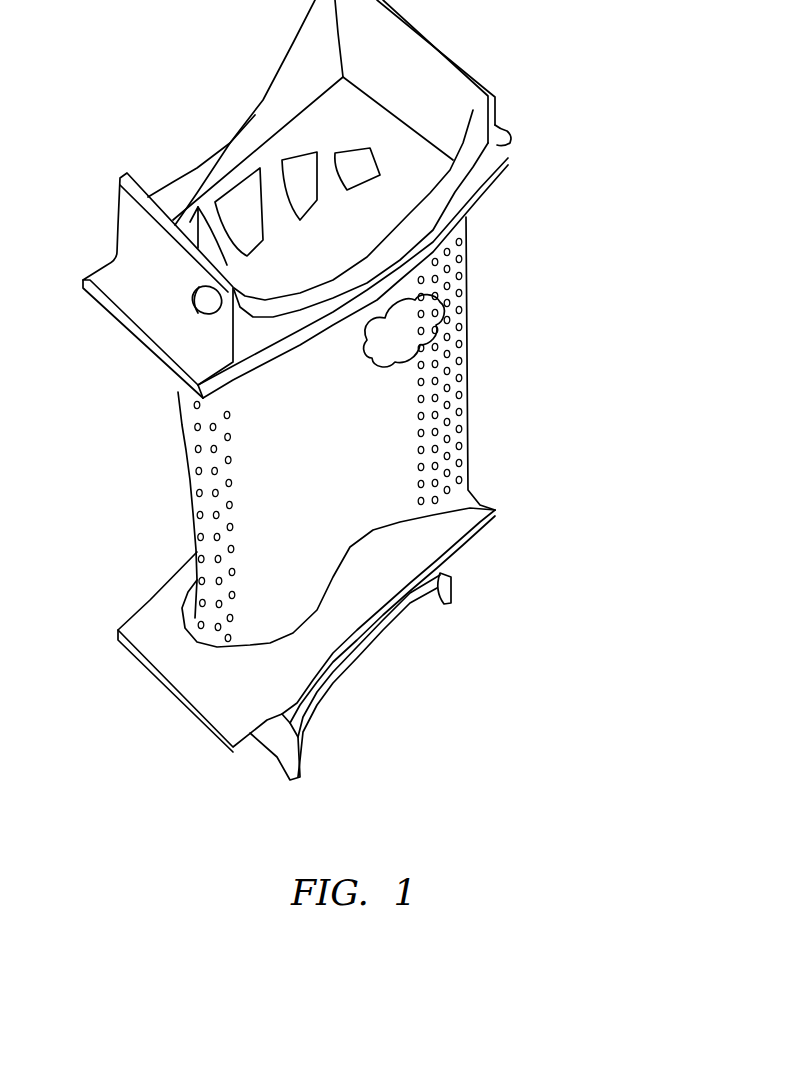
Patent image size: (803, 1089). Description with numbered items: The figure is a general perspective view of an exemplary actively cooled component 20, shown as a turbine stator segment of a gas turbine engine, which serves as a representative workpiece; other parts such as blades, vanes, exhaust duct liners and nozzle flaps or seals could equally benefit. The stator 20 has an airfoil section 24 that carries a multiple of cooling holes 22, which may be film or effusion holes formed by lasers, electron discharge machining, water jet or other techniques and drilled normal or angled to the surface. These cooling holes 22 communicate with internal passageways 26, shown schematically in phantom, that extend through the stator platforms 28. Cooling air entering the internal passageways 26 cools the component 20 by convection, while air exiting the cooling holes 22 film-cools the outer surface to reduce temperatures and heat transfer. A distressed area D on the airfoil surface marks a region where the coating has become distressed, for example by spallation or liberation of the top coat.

The component 20 is at (346, 390).
The cooling holes 22 is at (287, 439).
The airfoil section 24 is at (353, 432).
The internal passageways 26 is at (267, 175).
The stator platforms 28 is at (257, 476).
The distressed areas D is at (402, 327).